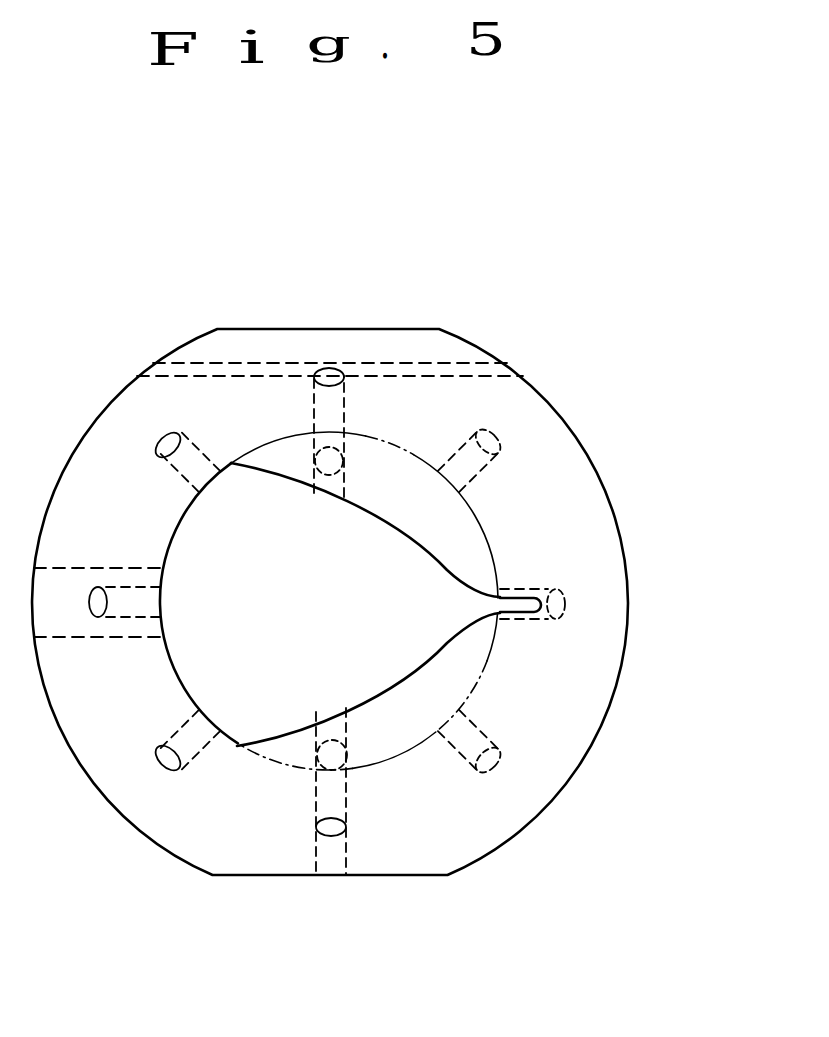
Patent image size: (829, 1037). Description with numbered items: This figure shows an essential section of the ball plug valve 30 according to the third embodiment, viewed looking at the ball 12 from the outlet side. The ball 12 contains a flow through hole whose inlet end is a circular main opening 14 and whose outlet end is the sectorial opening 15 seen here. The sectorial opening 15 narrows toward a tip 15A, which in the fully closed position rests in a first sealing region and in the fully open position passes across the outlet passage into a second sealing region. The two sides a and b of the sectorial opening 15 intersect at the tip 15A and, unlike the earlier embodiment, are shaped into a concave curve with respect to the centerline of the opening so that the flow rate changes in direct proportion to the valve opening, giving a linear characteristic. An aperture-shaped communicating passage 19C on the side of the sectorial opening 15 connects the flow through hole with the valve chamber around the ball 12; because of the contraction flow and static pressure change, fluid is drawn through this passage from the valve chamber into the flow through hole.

The ball plug valve 30 is at (148, 326).
The ball 12 is at (568, 448).
The circular main opening 14 is at (487, 661).
The sectorial opening 15 is at (370, 514).
The tip 15A is at (537, 617).
The communicating passage 19C is at (97, 618).
The side a is at (260, 471).
The side b is at (272, 737).